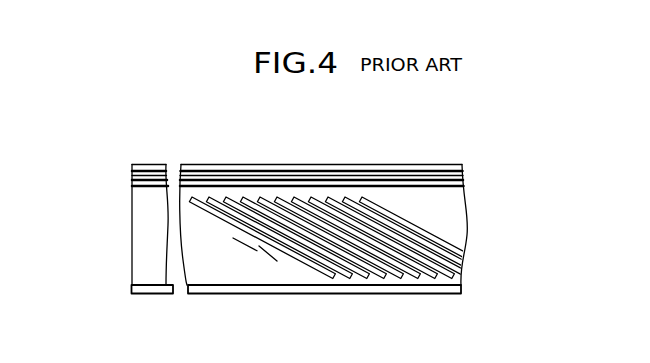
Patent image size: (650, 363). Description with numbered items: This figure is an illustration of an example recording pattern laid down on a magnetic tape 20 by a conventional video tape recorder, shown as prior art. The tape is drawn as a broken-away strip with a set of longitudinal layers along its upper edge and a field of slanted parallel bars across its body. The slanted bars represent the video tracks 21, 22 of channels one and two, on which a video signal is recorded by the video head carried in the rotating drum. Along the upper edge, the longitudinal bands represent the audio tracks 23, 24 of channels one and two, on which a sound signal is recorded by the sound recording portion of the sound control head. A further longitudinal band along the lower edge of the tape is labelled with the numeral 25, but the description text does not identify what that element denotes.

The magnetic tape 20 is at (128, 255).
The video track of channel 1 21 is at (343, 193).
The video track of channel 2 22 is at (371, 207).
The audio track of channel 1 23 is at (150, 165).
The audio track of channel 2 24 is at (140, 184).
The base plate 25 is at (280, 294).